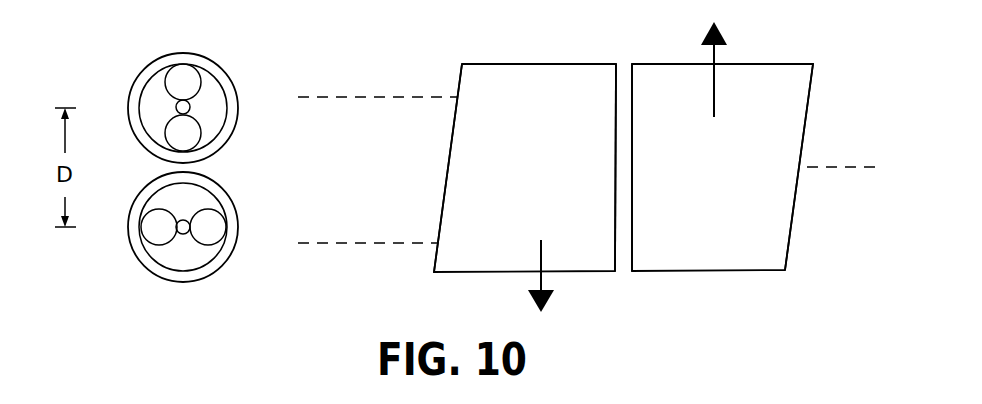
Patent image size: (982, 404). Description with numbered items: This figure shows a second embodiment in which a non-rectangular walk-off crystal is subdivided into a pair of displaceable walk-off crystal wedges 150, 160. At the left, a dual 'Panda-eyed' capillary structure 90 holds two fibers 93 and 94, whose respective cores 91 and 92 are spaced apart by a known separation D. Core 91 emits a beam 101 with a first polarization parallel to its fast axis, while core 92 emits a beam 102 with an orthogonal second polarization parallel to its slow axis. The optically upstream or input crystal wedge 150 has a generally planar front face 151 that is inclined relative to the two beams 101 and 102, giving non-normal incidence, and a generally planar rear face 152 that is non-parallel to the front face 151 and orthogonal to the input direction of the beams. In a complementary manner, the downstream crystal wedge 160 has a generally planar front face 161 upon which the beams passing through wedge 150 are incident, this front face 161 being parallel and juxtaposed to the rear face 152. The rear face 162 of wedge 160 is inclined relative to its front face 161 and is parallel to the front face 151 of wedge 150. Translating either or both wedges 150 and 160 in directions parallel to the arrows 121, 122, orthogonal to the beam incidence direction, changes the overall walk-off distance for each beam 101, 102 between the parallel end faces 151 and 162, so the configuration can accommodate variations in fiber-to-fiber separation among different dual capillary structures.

The dual 'Panda-eyed' capillary structure 90 is at (163, 162).
The fiber core 91 is at (185, 234).
The fiber core 92 is at (188, 103).
The fiber 93 is at (153, 273).
The fiber 94 is at (178, 54).
The beam 101 is at (327, 243).
The beam 102 is at (327, 97).
The arrow 121 is at (541, 276).
The arrow 122 is at (715, 60).
The input crystal wedge 150 is at (555, 139).
The front face 151 is at (457, 83).
The rear face 152 is at (615, 85).
The downstream crystal wedge 160 is at (750, 193).
The front face 161 is at (632, 253).
The rear face 162 is at (790, 241).